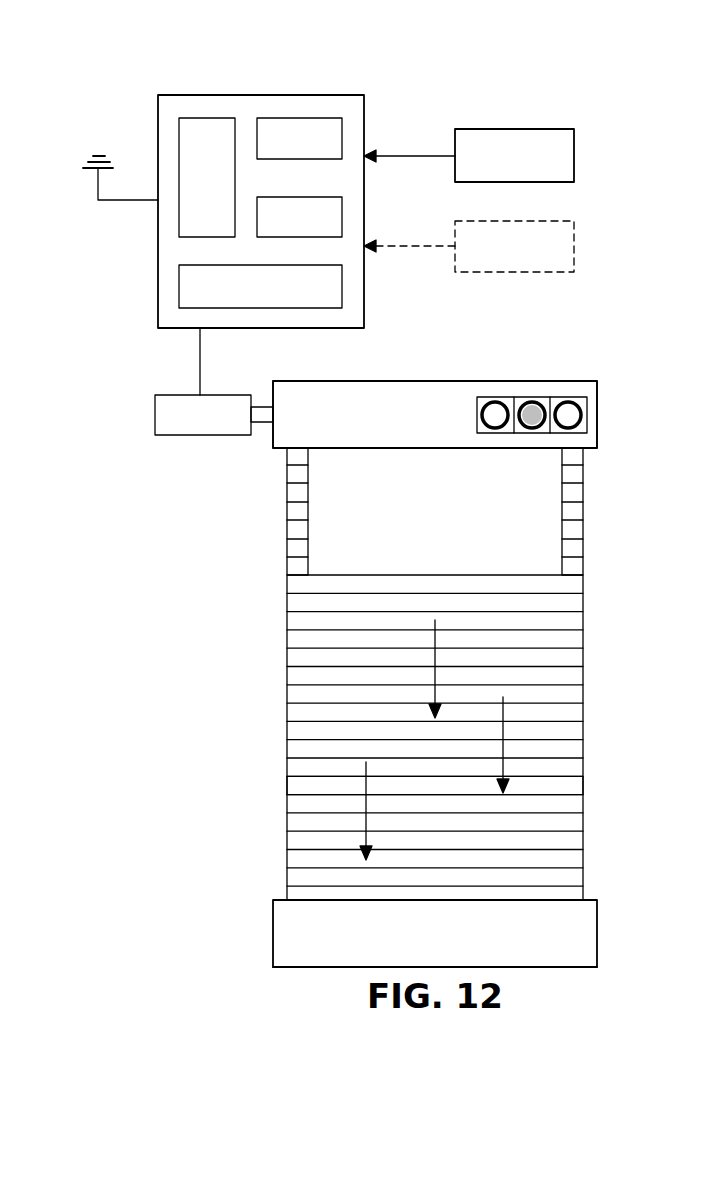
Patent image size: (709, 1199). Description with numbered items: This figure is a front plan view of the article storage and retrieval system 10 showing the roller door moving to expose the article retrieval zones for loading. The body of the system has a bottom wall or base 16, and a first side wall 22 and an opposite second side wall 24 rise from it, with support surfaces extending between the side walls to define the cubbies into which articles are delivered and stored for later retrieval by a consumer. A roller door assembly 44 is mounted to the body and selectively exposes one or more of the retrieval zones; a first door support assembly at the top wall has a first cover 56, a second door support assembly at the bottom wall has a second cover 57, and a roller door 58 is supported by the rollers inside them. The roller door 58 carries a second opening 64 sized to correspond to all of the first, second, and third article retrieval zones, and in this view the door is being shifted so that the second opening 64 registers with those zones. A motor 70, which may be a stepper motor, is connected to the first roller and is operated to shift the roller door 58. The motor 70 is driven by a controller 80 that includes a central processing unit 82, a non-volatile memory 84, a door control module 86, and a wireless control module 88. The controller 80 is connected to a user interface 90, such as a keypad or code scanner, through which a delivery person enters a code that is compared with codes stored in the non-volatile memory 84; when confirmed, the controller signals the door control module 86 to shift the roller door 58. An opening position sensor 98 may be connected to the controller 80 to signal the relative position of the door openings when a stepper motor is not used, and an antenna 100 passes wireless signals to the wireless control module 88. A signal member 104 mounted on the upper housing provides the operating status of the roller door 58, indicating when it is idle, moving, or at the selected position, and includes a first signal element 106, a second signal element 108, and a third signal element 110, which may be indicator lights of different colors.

The article storage and retrieval system 10 is at (439, 728).
The bottom wall or base 16 is at (568, 968).
The first side wall 22 is at (287, 567).
The second side wall 24 is at (583, 675).
The roller door assembly 44 is at (467, 374).
The first cover 56 is at (293, 417).
The second cover 57 is at (283, 935).
The roller door 58 is at (310, 789).
The second opening 64 is at (557, 500).
The motor 70 is at (205, 436).
The controller 80 is at (221, 211).
The central processing unit 82 is at (224, 193).
The non-volatile memory 84 is at (284, 153).
The door control module 86 is at (284, 230).
The wireless control module 88 is at (246, 300).
The user interface 90 is at (500, 167).
The opening position sensor 98 is at (500, 259).
The antenna 100 is at (100, 180).
The signal member 104 is at (517, 382).
The first signal element 106 is at (490, 409).
The second signal element 108 is at (533, 406).
The third signal element 110 is at (573, 413).